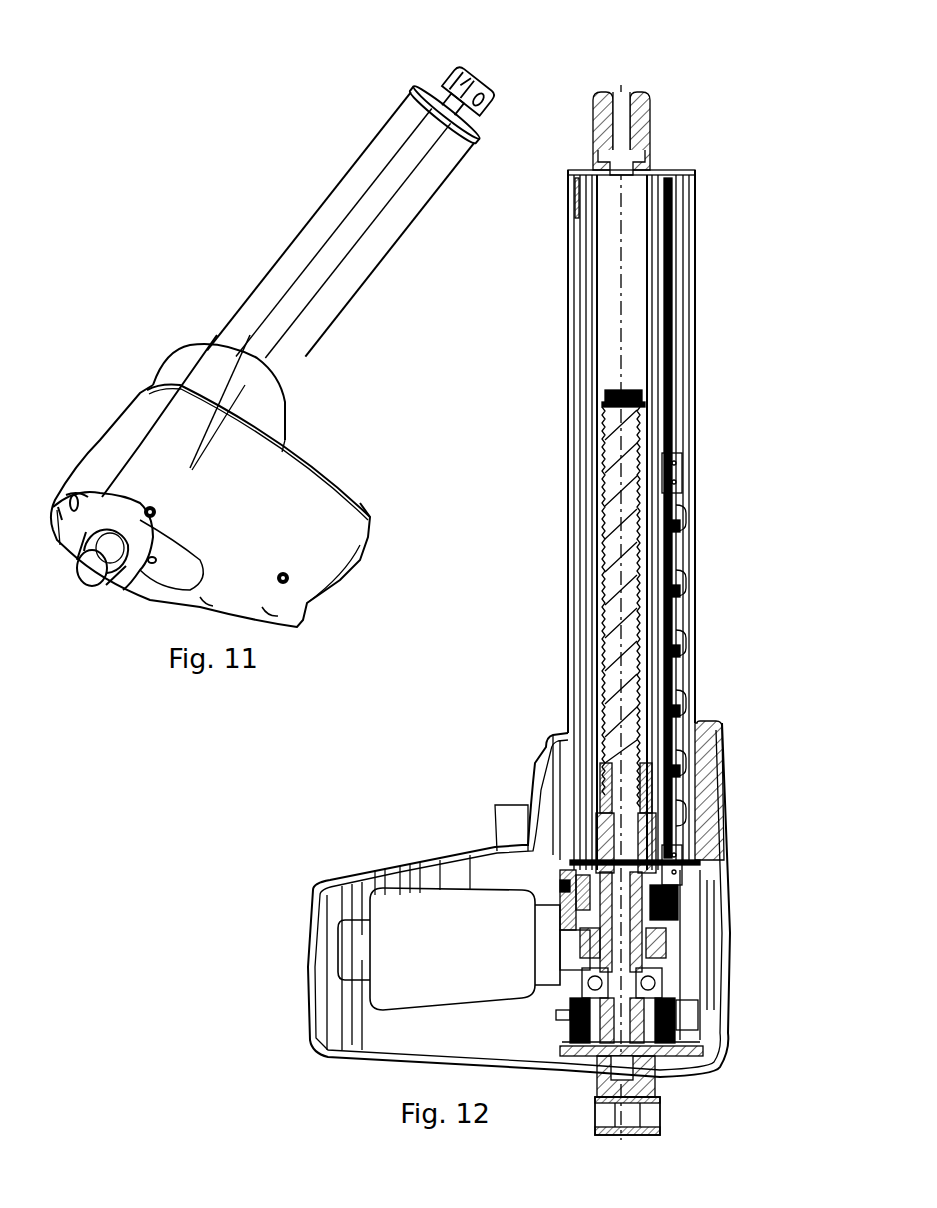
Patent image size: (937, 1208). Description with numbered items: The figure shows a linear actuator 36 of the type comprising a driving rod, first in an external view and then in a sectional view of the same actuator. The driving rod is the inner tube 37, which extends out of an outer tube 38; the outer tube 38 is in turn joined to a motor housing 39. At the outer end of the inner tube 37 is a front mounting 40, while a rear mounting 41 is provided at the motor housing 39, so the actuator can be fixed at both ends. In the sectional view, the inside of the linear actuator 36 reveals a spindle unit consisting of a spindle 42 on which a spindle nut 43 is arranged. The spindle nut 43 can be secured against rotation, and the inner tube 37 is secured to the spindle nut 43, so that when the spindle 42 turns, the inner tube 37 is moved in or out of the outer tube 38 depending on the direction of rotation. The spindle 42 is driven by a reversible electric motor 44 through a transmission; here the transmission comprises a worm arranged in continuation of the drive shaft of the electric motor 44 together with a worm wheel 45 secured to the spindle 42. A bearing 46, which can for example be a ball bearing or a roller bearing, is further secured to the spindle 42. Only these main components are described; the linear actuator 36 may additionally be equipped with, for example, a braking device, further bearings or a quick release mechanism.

In FIG. 11, the linear actuator 36 is at (278, 154).
In FIG. 12, the linear actuator 36 is at (525, 636).
In FIG. 11, the inner tube 37 is at (452, 95).
In FIG. 12, the inner tube 37 is at (570, 325).
In FIG. 11, the outer tube 38 is at (284, 266).
In FIG. 12, the outer tube 38 is at (570, 456).
In FIG. 11, the motor housing 39 is at (108, 432).
In FIG. 12, the motor housing 39 is at (325, 880).
In FIG. 11, the front mounting 40 is at (490, 58).
In FIG. 12, the front mounting 40 is at (652, 119).
In FIG. 11, the rear mounting 41 is at (89, 582).
In FIG. 12, the rear mounting 41 is at (650, 1112).
In FIG. 12, the spindle 42 is at (625, 427).
In FIG. 12, the spindle nut 43 is at (696, 786).
In FIG. 12, the electric motor 44 is at (386, 920).
In FIG. 12, the worm wheel 45 is at (680, 950).
In FIG. 12, the bearing 46 is at (697, 990).